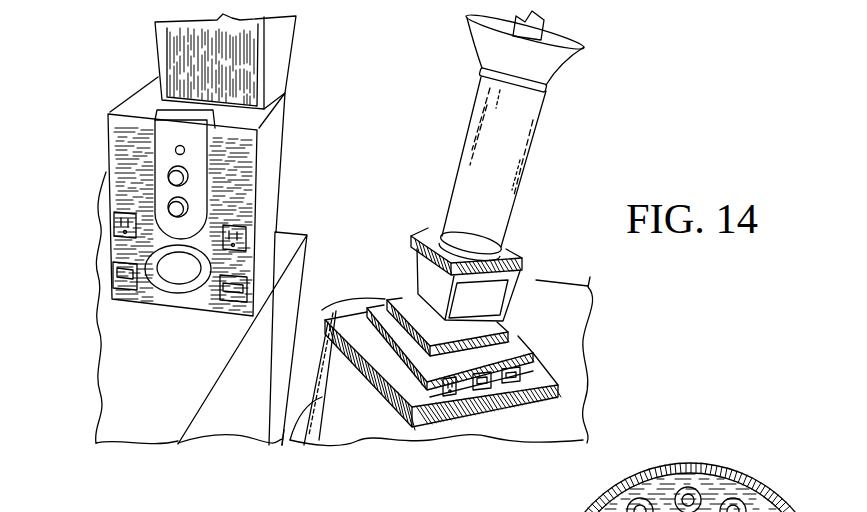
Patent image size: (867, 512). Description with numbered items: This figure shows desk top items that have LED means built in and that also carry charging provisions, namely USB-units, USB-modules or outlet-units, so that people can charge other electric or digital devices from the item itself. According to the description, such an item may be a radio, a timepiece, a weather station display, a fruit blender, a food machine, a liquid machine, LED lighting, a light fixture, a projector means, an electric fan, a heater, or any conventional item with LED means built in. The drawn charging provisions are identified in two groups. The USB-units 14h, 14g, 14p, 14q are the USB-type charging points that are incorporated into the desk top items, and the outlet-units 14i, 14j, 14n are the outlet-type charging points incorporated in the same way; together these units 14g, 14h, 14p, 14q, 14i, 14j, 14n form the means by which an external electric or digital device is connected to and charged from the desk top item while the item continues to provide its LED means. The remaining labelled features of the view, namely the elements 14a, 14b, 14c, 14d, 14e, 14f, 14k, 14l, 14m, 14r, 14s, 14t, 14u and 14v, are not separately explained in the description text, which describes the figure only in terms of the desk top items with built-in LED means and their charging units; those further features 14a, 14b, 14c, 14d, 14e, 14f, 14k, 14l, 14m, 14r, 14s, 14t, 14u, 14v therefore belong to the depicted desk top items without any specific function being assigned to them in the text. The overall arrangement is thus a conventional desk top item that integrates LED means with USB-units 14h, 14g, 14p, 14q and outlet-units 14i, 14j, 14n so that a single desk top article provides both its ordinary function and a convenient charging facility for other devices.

The plank 14a is at (288, 243).
The cabinet 14b is at (150, 299).
The control panel strip 14c is at (177, 147).
The circular opening 14d is at (184, 294).
The button 14e is at (180, 206).
The button 14f is at (180, 177).
The USB-unit 14g is at (229, 299).
The USB-unit 14h is at (123, 284).
The outlet-unit 14i is at (248, 248).
The outlet-unit 14j is at (113, 214).
The floor 14k is at (375, 426).
The plank edge 14l is at (278, 441).
The ramp 14m is at (322, 441).
The outlet-unit 14n is at (455, 389).
The USB-unit 14p is at (480, 388).
The USB-unit 14q is at (553, 389).
The cap plate 14r is at (415, 243).
The side panel 14s is at (485, 297).
The pedestal block 14t is at (432, 298).
The column 14u is at (490, 233).
The funnel head 14v is at (483, 53).